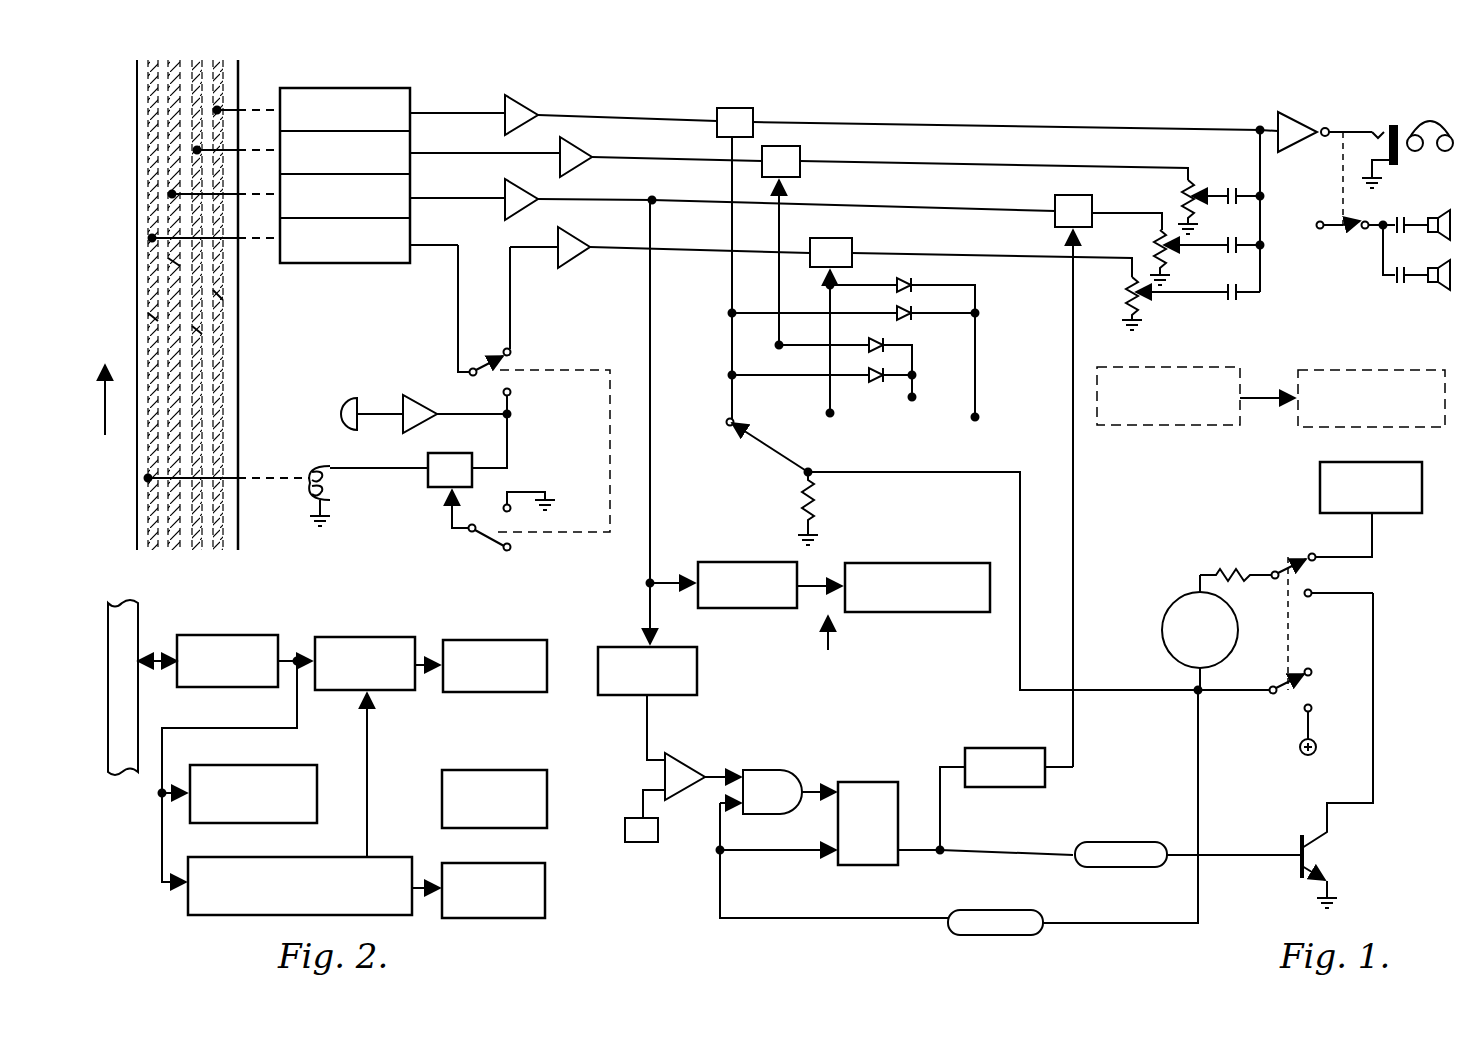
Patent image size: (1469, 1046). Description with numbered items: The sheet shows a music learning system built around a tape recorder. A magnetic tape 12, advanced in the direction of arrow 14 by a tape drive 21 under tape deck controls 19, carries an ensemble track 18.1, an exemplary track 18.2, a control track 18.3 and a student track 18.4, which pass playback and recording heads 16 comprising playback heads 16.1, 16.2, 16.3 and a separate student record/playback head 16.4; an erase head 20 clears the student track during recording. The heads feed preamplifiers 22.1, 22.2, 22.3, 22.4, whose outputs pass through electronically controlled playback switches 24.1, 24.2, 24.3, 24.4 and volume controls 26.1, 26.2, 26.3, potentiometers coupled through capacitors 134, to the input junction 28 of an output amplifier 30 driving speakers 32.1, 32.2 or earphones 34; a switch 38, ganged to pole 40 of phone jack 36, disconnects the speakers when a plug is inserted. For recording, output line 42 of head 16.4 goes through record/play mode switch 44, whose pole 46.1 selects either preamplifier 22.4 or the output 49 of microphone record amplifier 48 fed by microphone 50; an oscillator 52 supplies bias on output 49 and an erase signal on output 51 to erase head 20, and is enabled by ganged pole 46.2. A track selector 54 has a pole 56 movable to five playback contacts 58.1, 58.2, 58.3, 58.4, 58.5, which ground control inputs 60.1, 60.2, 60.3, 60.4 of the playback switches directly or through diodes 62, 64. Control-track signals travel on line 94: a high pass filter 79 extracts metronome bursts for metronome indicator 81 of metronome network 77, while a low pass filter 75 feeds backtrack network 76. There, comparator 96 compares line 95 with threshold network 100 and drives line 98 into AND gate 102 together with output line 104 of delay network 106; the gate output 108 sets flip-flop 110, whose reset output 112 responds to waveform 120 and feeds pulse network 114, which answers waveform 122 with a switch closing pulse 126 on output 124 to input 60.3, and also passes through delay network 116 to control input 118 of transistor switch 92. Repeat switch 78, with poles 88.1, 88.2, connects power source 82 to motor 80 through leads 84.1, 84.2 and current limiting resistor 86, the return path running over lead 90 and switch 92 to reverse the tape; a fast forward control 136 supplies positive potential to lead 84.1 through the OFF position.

In FIG. 1, the magnetic tape 12 is at (230, 405).
In FIG. 2, the magnetic tape 12 is at (110, 775).
In FIG. 1, the arrow 14 is at (105, 420).
In FIG. 1, the playback and recording heads 16 is at (420, 160).
In FIG. 1, the ensemble playback head 16.1 is at (430, 95).
In FIG. 1, the exemplary playback head 16.2 is at (435, 150).
In FIG. 1, the control playback head 16.3 is at (435, 194).
In FIG. 1, the student record/playback head 16.4 is at (435, 240).
In FIG. 1, the ensemble track 18.1 is at (213, 297).
In FIG. 1, the exemplary track 18.2 is at (200, 332).
In FIG. 1, the control track 18.3 is at (172, 262).
In FIG. 1, the student track 18.4 is at (152, 318).
In FIG. 1, the tape deck controls 19 is at (1168, 425).
In FIG. 2, the tape deck controls 19 is at (518, 770).
In FIG. 1, the erase head 20 is at (318, 468).
In FIG. 1, the tape drive 21 is at (1380, 370).
In FIG. 2, the tape drive 21 is at (515, 918).
In FIG. 1, the ensemble preamplifier 22.1 is at (540, 100).
In FIG. 1, the exemplary preamplifier 22.2 is at (578, 148).
In FIG. 1, the control track preamplifier 22.3 is at (555, 192).
In FIG. 1, the student preamplifier 22.4 is at (575, 262).
In FIG. 1, the ensemble playback switch 24.1 is at (745, 108).
In FIG. 1, the exemplary playback switch 24.2 is at (795, 148).
In FIG. 1, the control track playback switch 24.3 is at (907, 202).
In FIG. 1, the student playback switch 24.4 is at (848, 240).
In FIG. 1, the volume control 26.1 is at (1200, 180).
In FIG. 1, the volume control 26.2 is at (1178, 260).
In FIG. 1, the volume control 26.3 is at (1155, 305).
In FIG. 1, the input junction 28 is at (1260, 128).
In FIG. 1, the output amplifier 30 is at (1303, 115).
In FIG. 1, the speaker 32.1 is at (1438, 288).
In FIG. 1, the speaker 32.2 is at (1395, 262).
In FIG. 1, the earphones 34 is at (1440, 118).
In FIG. 2, the earphones 34 is at (485, 640).
In FIG. 1, the phone jack 36 is at (1380, 116).
In FIG. 1, the switch 38 is at (1348, 238).
In FIG. 1, the pole of phone jack 40 is at (1360, 140).
In FIG. 1, the output line 42 is at (458, 290).
In FIG. 1, the record/play mode switch 44 is at (555, 348).
In FIG. 1, the pole 46.1 is at (486, 352).
In FIG. 1, the pole 46.2 is at (490, 545).
In FIG. 1, the microphone record amplifier 48 is at (418, 390).
In FIG. 1, the output 49 is at (465, 413).
In FIG. 1, the microphone 50 is at (350, 395).
In FIG. 1, the output 51 is at (392, 466).
In FIG. 1, the oscillator 52 is at (430, 487).
In FIG. 1, the track selector 54 is at (752, 452).
In FIG. 2, the track selector 54 is at (362, 635).
In FIG. 1, the pole 56 is at (786, 485).
In FIG. 1, the playback contact 58.1 is at (725, 420).
In FIG. 1, the playback contact 58.2 is at (775, 388).
In FIG. 1, the playback contact 58.3 is at (834, 412).
In FIG. 1, the playback contact 58.4 is at (915, 392).
In FIG. 1, the playback contact 58.5 is at (980, 416).
In FIG. 1, the control input 60.1 is at (732, 140).
In FIG. 1, the control input 60.2 is at (790, 196).
In FIG. 1, the control input 60.3 is at (1068, 246).
In FIG. 1, the control input 60.4 is at (828, 282).
In FIG. 1, the diodes 62 is at (895, 345).
In FIG. 1, the diodes 64 is at (975, 280).
In FIG. 1, the low pass filter 75 is at (700, 670).
In FIG. 1, the backtrack network 76 is at (1248, 792).
In FIG. 2, the backtrack network 76 is at (210, 916).
In FIG. 1, the metronome detection and display network 77 is at (840, 641).
In FIG. 2, the metronome detection and display network 77 is at (290, 765).
In FIG. 1, the repeat switch 78 is at (1285, 560).
In FIG. 1, the high pass filter 79 is at (735, 560).
In FIG. 1, the motor 80 is at (1160, 625).
In FIG. 1, the metronome indicator 81 is at (945, 560).
In FIG. 1, the electric power source 82 is at (1312, 756).
In FIG. 1, the motor lead 84.1 is at (1200, 575).
In FIG. 1, the motor lead 84.2 is at (1210, 675).
In FIG. 1, the current limiting resistor 86 is at (1232, 582).
In FIG. 1, the pole 88.1 is at (1300, 568).
In FIG. 1, the pole 88.2 is at (1276, 712).
In FIG. 1, the lead 90 is at (1373, 694).
In FIG. 1, the semiconductor switch 92 is at (1330, 852).
In FIG. 1, the line 94 is at (650, 480).
In FIG. 1, the line 95 is at (660, 722).
In FIG. 1, the analog comparator 96 is at (690, 755).
In FIG. 1, the output line 98 is at (705, 795).
In FIG. 1, the threshold network 100 is at (648, 842).
In FIG. 1, the AND gate 102 is at (780, 768).
In FIG. 1, the output line 104 is at (775, 920).
In FIG. 1, the delay network 106 is at (1045, 930).
In FIG. 1, the output 108 is at (815, 780).
In FIG. 1, the flip-flop 110 is at (875, 782).
In FIG. 1, the reset output 112 is at (920, 855).
In FIG. 1, the single pulse producing network 114 is at (1015, 748).
In FIG. 1, the delay network 116 is at (1125, 867).
In FIG. 1, the control input 118 is at (1295, 866).
In FIG. 1, the waveform 120 is at (845, 878).
In FIG. 1, the waveform 122 is at (1020, 735).
In FIG. 1, the output 124 is at (1068, 775).
In FIG. 1, the switch closing pulse 126 is at (1082, 552).
In FIG. 1, the capacitors 134 is at (1236, 302).
In FIG. 1, the fast forward control 136 is at (1320, 478).